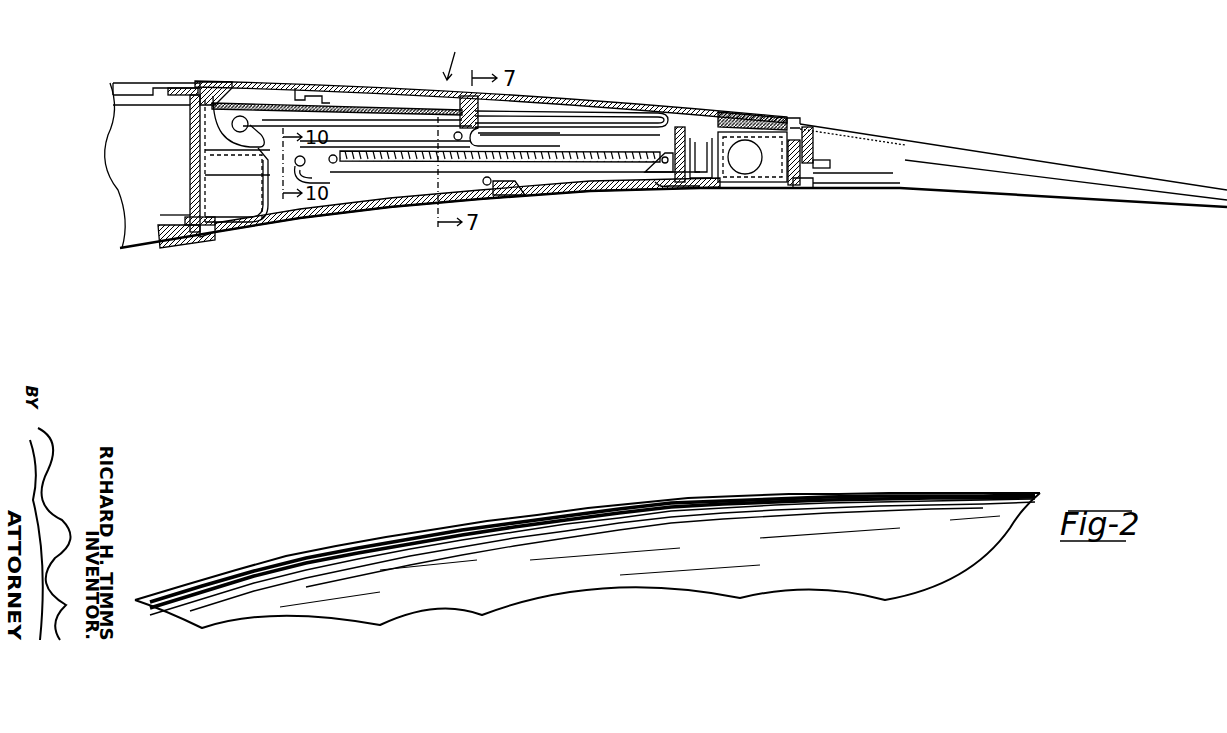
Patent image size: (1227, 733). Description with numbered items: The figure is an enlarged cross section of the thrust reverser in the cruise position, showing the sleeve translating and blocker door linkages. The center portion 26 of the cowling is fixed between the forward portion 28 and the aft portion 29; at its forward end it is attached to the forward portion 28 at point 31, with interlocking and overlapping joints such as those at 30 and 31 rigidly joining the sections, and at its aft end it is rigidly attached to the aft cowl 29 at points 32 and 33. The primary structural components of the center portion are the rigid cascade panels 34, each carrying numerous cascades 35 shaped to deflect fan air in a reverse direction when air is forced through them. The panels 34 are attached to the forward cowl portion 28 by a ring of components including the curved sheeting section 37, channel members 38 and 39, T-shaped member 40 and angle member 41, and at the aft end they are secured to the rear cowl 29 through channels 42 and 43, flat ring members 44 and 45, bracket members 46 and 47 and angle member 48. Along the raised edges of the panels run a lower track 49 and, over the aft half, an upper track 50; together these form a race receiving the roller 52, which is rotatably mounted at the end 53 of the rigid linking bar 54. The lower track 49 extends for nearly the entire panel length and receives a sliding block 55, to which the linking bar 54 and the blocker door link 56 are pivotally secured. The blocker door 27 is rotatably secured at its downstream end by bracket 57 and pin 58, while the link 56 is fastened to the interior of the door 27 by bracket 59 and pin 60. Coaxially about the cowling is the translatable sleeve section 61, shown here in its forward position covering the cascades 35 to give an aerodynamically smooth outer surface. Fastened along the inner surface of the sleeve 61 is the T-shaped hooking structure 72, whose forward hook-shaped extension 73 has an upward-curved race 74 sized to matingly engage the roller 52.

The center portion of the cowling 26 is at (457, 54).
The blocker door 27 is at (396, 210).
The forward portion of the cowling 28 is at (120, 122).
The aft portion of the cowling 29 is at (913, 165).
The interlocking joint 30 is at (185, 90).
The forward attachment point 31 is at (192, 233).
The aft attachment point 32 is at (798, 126).
The aft attachment point 33 is at (835, 190).
The cascade panel 34 is at (225, 165).
The cascades 35 is at (545, 163).
The curved sheeting section 37 is at (268, 195).
The channel member 38 is at (212, 86).
The channel member 39 is at (166, 233).
The T-shaped member 40 is at (200, 157).
The angle member 41 is at (188, 197).
The channel 42 is at (680, 183).
The channel 43 is at (700, 180).
The flat ring member 44 is at (750, 118).
The flat ring member 45 is at (745, 184).
The bracket member 46 is at (792, 186).
The bracket member 47 is at (806, 190).
The angle member 48 is at (815, 142).
The lower track 49 is at (520, 136).
The upper track 50 is at (605, 115).
The roller 52 is at (478, 140).
The end of linking bar 53 is at (460, 130).
The linking bar 54 is at (383, 110).
The sliding block 55 is at (325, 124).
The blocker door link 56 is at (345, 176).
The bracket 57 is at (652, 172).
The pin 58 is at (667, 186).
The bracket 59 is at (506, 197).
The pin 60 is at (488, 188).
The translatable sleeve section 61 is at (412, 87).
The T-shaped hooking structure 72 is at (355, 118).
The hook-shaped extension 73 is at (230, 108).
The race 74 is at (246, 122).